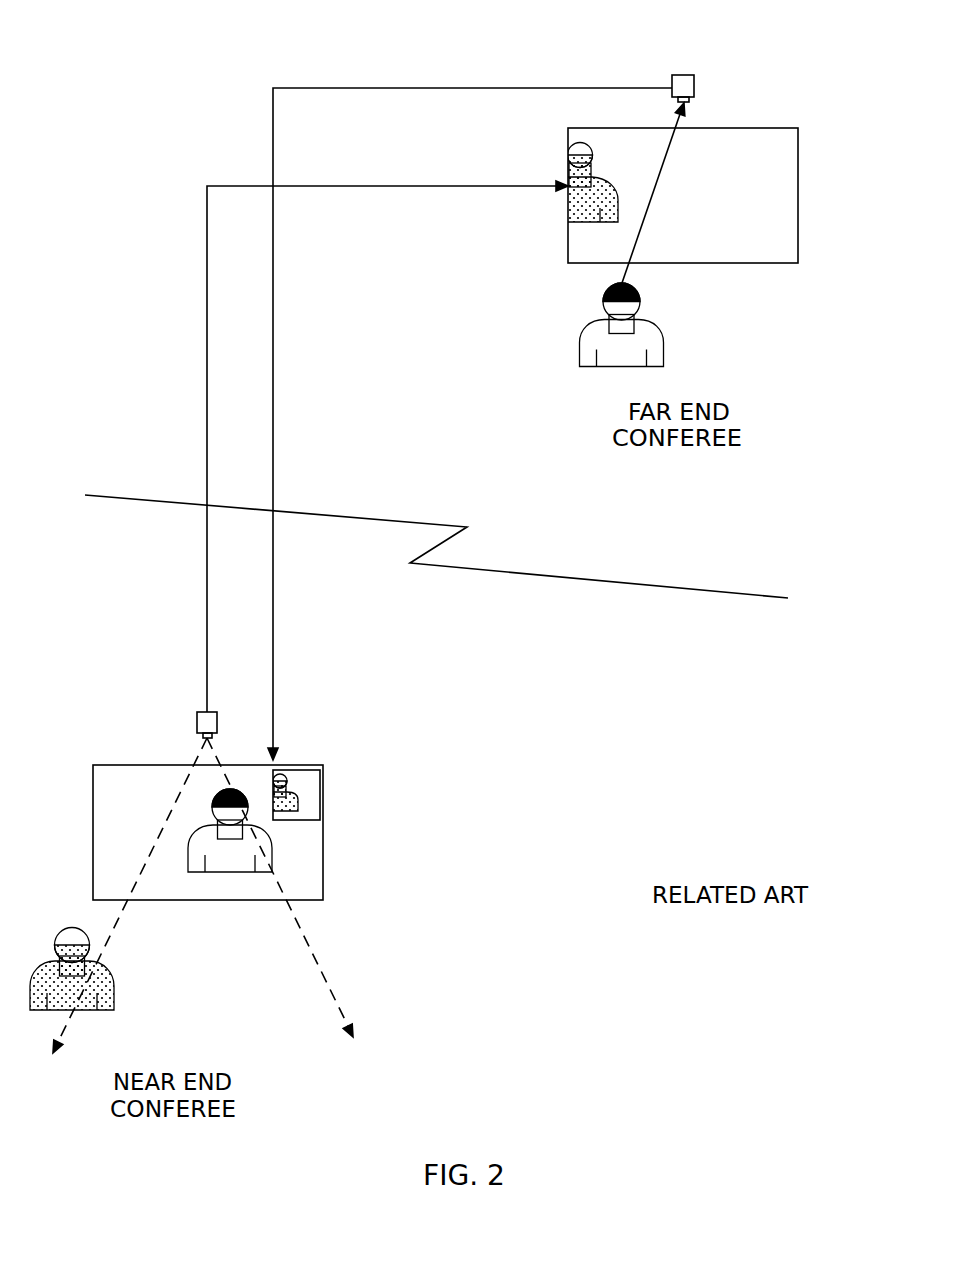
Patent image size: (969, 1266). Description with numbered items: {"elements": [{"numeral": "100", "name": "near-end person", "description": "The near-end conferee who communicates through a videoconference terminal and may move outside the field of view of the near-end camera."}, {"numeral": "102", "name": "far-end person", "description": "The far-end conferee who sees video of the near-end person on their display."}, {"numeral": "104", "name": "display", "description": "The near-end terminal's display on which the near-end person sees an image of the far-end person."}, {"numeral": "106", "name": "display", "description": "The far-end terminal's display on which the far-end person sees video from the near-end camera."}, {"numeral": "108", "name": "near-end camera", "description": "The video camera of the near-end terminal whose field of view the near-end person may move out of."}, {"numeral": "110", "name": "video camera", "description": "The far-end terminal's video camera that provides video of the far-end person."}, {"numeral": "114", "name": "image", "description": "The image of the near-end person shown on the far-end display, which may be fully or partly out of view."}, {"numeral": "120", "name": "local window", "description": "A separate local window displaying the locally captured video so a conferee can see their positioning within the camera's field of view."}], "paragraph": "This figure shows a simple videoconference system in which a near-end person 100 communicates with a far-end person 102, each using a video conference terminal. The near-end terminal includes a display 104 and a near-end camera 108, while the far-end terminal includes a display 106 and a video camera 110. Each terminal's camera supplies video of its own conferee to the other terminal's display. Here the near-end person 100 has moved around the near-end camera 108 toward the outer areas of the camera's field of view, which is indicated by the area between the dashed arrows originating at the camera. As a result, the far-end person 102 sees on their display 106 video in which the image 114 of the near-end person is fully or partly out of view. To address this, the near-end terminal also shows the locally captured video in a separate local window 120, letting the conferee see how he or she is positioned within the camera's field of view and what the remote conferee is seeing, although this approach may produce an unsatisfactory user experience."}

The near end conferee 100 is at (116, 985).
The far end conferee 102 is at (575, 353).
The near end display 104 is at (324, 866).
The far end display 106 is at (770, 128).
The near end camera 108 is at (197, 722).
The far end camera 110 is at (686, 73).
The image of near end conferee 114 is at (600, 222).
The picture-in-picture window 120 is at (314, 805).